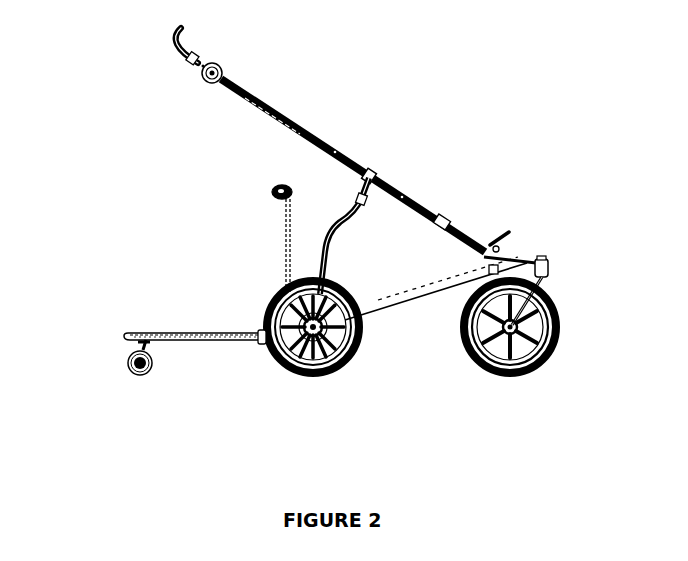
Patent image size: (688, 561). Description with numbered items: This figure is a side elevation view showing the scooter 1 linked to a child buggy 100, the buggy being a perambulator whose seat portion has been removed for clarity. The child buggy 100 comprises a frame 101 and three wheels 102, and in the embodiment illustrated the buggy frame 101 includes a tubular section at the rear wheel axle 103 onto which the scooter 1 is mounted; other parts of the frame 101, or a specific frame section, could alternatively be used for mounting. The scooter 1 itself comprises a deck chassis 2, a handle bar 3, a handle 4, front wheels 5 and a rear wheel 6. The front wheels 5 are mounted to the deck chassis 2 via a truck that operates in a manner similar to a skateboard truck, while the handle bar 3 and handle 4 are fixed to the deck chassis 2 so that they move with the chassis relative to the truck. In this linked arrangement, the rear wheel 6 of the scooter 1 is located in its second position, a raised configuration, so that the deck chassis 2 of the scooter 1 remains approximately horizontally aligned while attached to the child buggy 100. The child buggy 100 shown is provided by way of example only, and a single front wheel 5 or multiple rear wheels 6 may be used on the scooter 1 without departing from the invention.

The scooter 1 is at (174, 238).
The deck chassis 2 is at (197, 335).
The handle bar 3 is at (287, 235).
The handle 4 is at (273, 190).
The front wheels 5 is at (263, 340).
The rear wheel 6 is at (127, 363).
The child buggy 100 is at (442, 165).
The frame 101 is at (350, 156).
The wheels 102 is at (467, 357).
The rear wheel axle 103 is at (347, 290).